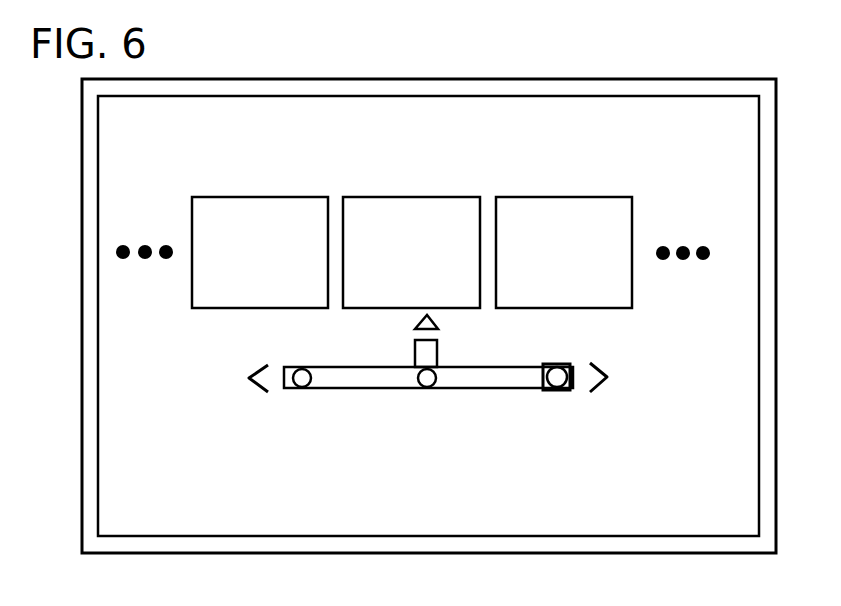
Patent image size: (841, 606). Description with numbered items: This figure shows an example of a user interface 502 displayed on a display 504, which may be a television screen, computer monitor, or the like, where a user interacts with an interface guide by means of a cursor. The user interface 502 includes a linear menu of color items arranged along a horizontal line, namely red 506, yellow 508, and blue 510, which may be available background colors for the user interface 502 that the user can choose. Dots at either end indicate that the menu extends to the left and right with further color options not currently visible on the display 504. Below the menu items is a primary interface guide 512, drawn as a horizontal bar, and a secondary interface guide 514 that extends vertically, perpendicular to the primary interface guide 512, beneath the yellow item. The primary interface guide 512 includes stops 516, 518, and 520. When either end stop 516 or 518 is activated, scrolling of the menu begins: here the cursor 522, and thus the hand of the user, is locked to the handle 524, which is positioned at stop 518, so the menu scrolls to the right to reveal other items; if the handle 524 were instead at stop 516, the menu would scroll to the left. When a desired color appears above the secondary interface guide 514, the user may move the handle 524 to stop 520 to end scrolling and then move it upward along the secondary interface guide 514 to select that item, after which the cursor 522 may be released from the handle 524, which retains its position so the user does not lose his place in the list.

The user interface 502 is at (722, 149).
The display 504 is at (623, 79).
The red 506 is at (242, 277).
The yellow 508 is at (394, 277).
The blue 510 is at (546, 277).
The primary interface guide 512 is at (328, 367).
The secondary interface guide 514 is at (415, 353).
The stop 516 is at (299, 387).
The stop 518 is at (554, 390).
The stop 520 is at (424, 387).
The cursor 522 is at (567, 365).
The handle 524 is at (563, 392).